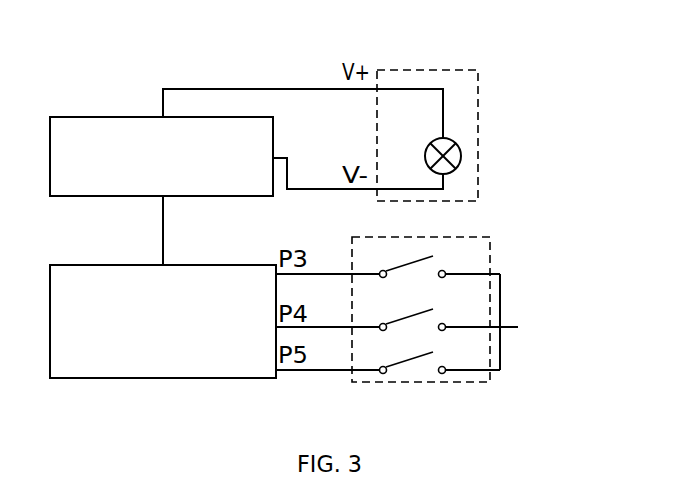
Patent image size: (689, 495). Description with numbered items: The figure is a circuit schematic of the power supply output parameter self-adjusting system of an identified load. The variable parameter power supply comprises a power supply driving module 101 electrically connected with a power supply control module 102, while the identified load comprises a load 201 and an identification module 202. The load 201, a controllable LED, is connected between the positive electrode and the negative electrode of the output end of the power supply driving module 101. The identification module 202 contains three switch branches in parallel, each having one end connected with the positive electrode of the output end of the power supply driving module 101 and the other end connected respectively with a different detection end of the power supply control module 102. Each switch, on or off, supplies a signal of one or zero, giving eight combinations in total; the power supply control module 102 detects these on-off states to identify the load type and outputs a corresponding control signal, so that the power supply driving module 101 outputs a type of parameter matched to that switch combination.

The power supply driving module 101 is at (161, 156).
The power supply control module 102 is at (163, 321).
The load 201 is at (447, 107).
The identification module 202 is at (450, 334).